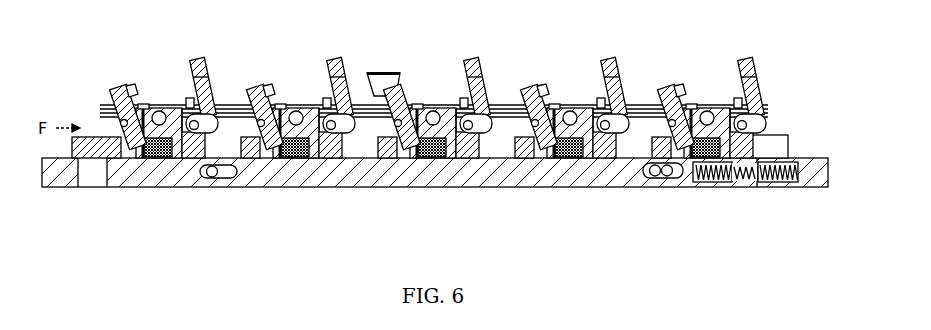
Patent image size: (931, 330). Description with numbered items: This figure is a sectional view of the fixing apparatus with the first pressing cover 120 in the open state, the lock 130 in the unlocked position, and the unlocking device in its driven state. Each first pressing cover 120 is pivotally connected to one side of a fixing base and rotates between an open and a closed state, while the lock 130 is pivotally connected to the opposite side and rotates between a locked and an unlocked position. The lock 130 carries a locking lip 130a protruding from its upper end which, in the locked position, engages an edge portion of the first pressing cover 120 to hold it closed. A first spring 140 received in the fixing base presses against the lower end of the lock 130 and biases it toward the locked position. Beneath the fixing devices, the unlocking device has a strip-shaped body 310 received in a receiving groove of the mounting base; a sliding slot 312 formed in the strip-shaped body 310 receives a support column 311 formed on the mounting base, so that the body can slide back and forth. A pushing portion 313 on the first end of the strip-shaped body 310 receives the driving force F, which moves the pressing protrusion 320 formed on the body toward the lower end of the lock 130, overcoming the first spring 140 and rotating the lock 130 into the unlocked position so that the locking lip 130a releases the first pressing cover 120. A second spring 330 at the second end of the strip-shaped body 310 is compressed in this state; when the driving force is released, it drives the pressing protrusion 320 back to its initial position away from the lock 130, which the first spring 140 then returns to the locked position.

The first pressing cover 120 is at (627, 84).
The lock 130 is at (539, 93).
The locking lip 130a is at (564, 84).
The first spring 140 is at (567, 164).
The strip-shaped body 310 is at (435, 194).
The support column 311 is at (212, 173).
The sliding slot 312 is at (236, 174).
The pushing portion 313 is at (92, 137).
The pressing protrusion 320 is at (502, 97).
The second spring 330 is at (740, 176).